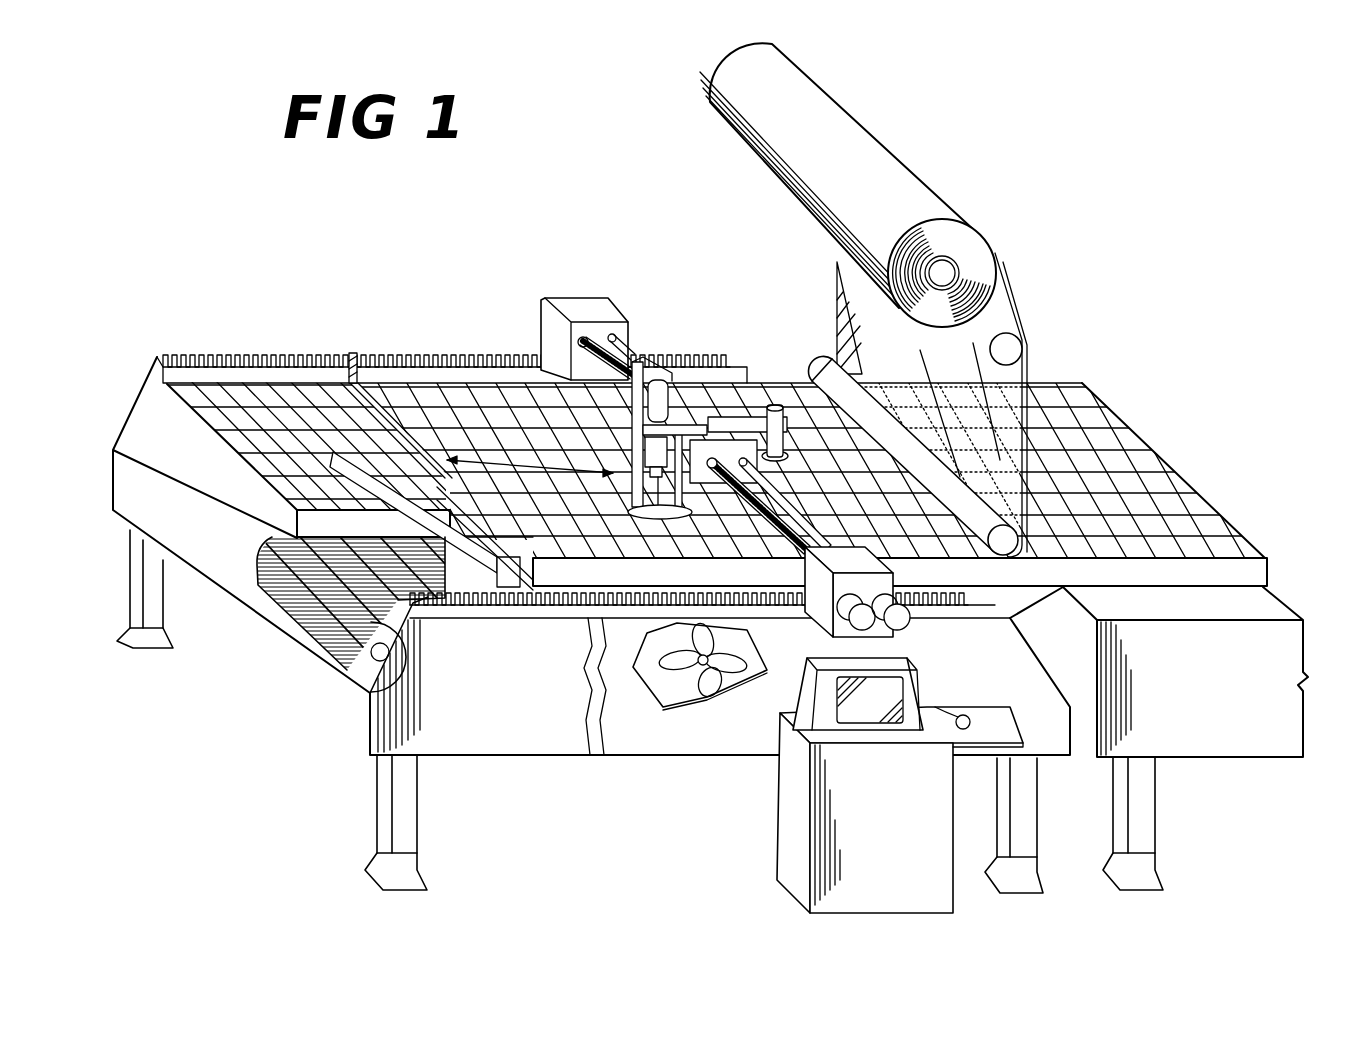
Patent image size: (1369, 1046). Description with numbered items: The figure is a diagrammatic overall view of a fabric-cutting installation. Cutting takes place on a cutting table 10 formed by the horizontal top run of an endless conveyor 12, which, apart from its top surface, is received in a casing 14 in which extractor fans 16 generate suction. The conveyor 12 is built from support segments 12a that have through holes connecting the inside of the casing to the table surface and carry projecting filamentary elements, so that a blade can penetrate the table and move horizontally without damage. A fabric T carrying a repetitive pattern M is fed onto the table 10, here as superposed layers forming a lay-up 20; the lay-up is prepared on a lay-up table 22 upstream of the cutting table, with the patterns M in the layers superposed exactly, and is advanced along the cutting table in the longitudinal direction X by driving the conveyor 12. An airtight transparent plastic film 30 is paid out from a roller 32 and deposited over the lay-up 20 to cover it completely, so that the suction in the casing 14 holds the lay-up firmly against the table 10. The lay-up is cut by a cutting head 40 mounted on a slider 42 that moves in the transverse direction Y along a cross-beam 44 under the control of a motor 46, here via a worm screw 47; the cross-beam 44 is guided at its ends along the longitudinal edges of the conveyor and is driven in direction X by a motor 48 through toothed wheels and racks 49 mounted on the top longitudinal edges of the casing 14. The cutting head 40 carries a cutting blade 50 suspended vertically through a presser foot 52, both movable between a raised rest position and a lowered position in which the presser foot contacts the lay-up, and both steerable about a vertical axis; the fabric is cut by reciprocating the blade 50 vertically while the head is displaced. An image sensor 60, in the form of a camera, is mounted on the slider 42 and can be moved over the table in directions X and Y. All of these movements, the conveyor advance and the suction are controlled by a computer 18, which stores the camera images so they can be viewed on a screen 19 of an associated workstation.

The cutting table 10 is at (1257, 570).
The endless conveyor 12 is at (363, 670).
The support segments 12a is at (290, 600).
The casing 14 is at (463, 747).
The extractor fans 16 is at (690, 683).
The computer 18 is at (790, 793).
The screen 19 is at (887, 693).
The lay-up 20 is at (1210, 503).
The lay-up table 22 is at (1308, 637).
The airtight transparent film 30 is at (840, 305).
The roller 32 is at (963, 237).
The cutting head 40 is at (655, 382).
The slider 42 is at (713, 413).
The cross-beam 44 is at (890, 550).
The motor 46 is at (862, 620).
The worm screw 47 is at (768, 533).
The motor 48 is at (897, 617).
The toothed wheels and racks 49 is at (296, 357).
The cutting blade 50 is at (657, 508).
The presser foot 52 is at (623, 507).
The image sensor 60 is at (777, 405).
The longitudinal direction X is at (493, 458).
The transverse direction Y is at (547, 338).
The fabric T is at (1067, 365).
The repetitive pattern M is at (1102, 427).